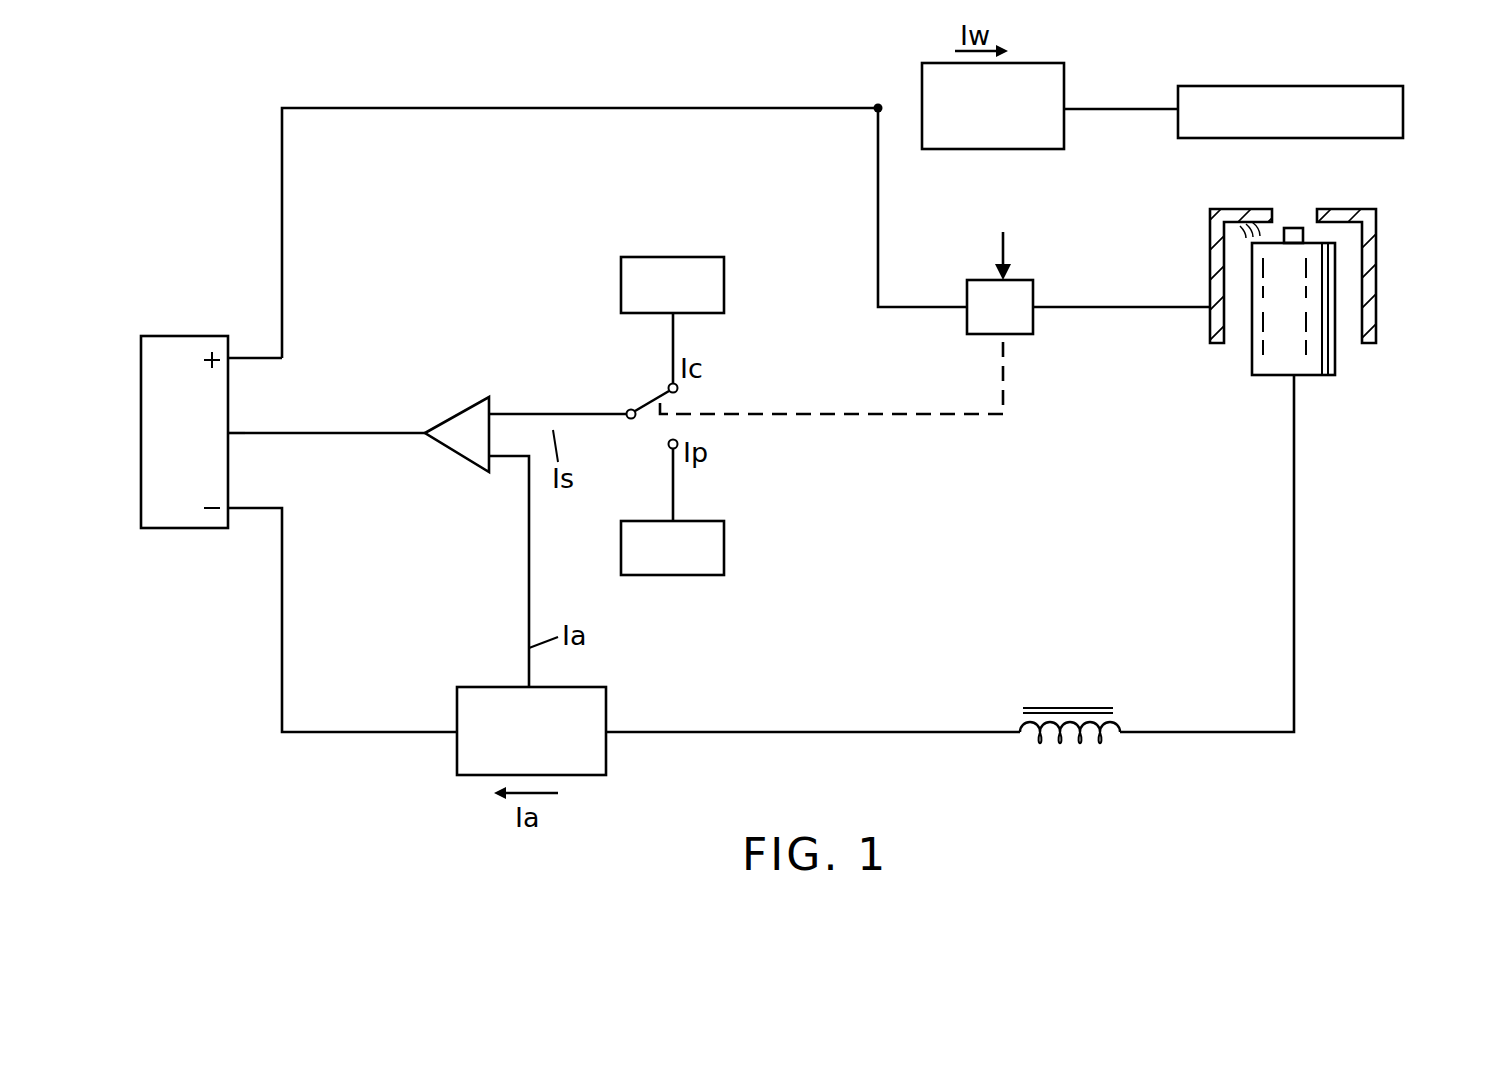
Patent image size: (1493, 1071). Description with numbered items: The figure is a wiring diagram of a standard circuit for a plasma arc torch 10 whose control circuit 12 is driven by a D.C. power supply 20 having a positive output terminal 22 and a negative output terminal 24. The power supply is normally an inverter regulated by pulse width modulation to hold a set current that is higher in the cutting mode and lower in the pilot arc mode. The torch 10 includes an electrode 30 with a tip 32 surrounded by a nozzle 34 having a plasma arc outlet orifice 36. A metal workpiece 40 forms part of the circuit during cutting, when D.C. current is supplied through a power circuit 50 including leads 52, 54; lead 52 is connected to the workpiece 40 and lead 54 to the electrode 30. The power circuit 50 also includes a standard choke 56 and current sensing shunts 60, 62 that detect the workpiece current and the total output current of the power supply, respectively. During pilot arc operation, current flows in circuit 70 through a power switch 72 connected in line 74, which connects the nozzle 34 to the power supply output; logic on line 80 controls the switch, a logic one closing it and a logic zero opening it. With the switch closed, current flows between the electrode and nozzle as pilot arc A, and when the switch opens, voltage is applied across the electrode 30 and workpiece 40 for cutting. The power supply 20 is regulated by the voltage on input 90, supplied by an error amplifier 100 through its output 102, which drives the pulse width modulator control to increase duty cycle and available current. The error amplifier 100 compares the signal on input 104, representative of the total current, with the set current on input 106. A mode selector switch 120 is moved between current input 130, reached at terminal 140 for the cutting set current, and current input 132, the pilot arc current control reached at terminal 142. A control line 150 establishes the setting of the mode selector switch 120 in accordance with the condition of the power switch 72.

The torch 10 is at (1323, 272).
The control circuit 12 is at (693, 82).
The D.C. power supply 20 is at (177, 335).
The positive output terminal 22 is at (233, 355).
The negative output terminal 24 is at (231, 512).
The electrode 30 is at (1335, 362).
The tip 32 is at (1295, 228).
The nozzle 34 is at (1377, 240).
The plasma arc outlet orifice 36 is at (1283, 212).
The workpiece 40 is at (1303, 86).
The power circuit 50 is at (927, 763).
The lead 52 is at (1117, 113).
The lead 54 is at (1212, 735).
The choke 56 is at (1120, 713).
The current sensing shunt 60 is at (1048, 63).
The current sensing shunt 62 is at (606, 693).
The circuit 70 is at (1060, 285).
The power switch 72 is at (1033, 287).
The line 74 is at (1095, 307).
The line 80 is at (1003, 247).
The input 90 is at (231, 430).
The error amplifier 100 is at (455, 413).
The output 102 is at (349, 431).
The input 104 is at (529, 612).
The input 106 is at (533, 412).
The mode selector switch 120 is at (704, 395).
The current input 130 is at (725, 273).
The current input 132 is at (724, 562).
The terminal 140 is at (670, 385).
The terminal 142 is at (670, 448).
The control line 150 is at (857, 418).
The pilot arc A is at (1242, 233).